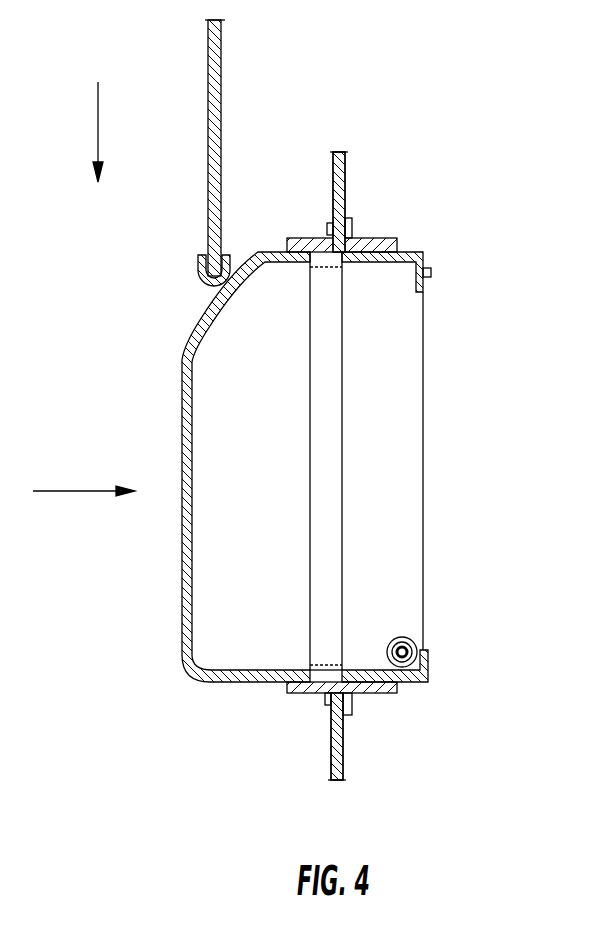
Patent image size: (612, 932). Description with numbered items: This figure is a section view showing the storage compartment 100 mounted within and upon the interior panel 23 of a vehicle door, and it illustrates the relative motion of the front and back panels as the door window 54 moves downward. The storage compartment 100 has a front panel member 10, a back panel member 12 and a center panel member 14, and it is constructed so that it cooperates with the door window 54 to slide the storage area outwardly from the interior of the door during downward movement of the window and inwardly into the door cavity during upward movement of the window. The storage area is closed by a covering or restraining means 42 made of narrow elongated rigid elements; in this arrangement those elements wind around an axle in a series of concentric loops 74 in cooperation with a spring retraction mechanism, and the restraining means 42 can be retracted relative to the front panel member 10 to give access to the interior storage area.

The storage compartment 100 is at (492, 256).
The door window 54 is at (220, 62).
The center panel member 14 is at (228, 682).
The covering or restraining means 42 is at (423, 388).
The back panel member 12 is at (383, 240).
The front panel member 10 is at (410, 682).
The interior panel 23 is at (345, 173).
The concentric loops 74 is at (415, 651).